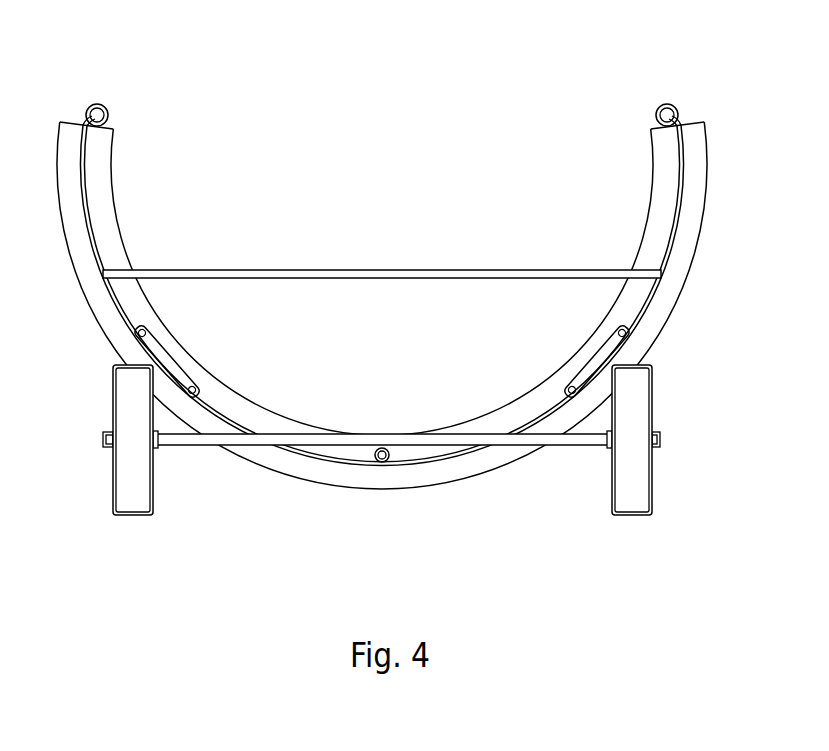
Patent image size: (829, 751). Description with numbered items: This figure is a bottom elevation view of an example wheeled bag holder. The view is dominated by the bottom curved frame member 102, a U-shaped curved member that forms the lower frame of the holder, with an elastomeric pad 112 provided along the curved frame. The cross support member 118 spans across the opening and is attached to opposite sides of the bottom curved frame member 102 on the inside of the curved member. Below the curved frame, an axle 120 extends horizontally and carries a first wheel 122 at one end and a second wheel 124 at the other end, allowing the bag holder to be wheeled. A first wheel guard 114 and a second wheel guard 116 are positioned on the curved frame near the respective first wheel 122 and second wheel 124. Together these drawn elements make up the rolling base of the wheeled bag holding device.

The bottom curved frame member 102 is at (104, 106).
The elastomeric pad 112 is at (102, 207).
The first wheel guard 114 is at (177, 363).
The second wheel guard 116 is at (590, 372).
The cross support member 118 is at (360, 272).
The axle 120 is at (175, 440).
The first wheel 122 is at (133, 501).
The second wheel 124 is at (630, 502).